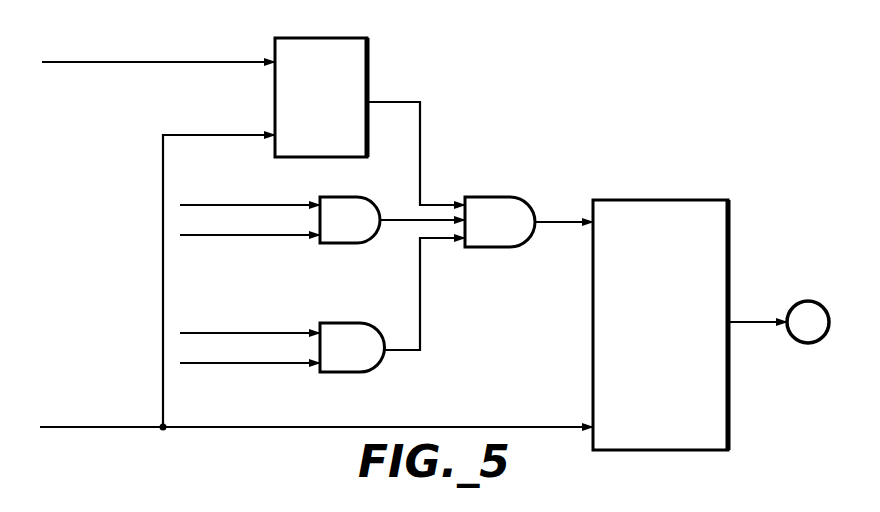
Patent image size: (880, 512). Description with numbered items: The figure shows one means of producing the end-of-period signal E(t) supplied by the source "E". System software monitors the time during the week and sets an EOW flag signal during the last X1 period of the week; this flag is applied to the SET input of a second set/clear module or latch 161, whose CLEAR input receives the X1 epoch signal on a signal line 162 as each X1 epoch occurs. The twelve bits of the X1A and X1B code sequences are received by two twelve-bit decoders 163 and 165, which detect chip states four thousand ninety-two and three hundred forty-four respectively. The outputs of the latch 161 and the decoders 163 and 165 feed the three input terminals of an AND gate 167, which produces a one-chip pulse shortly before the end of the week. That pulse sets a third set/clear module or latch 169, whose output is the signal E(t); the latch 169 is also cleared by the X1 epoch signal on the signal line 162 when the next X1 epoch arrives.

The second set/clear module or latch 161 is at (368, 55).
The signal line 162 is at (303, 425).
The 12-bit decoder (chip 4092) 163 is at (347, 195).
The 12-bit decoder (chip 344) 165 is at (347, 322).
The AND gate 167 is at (493, 196).
The third set/clear module or latch 169 is at (678, 199).